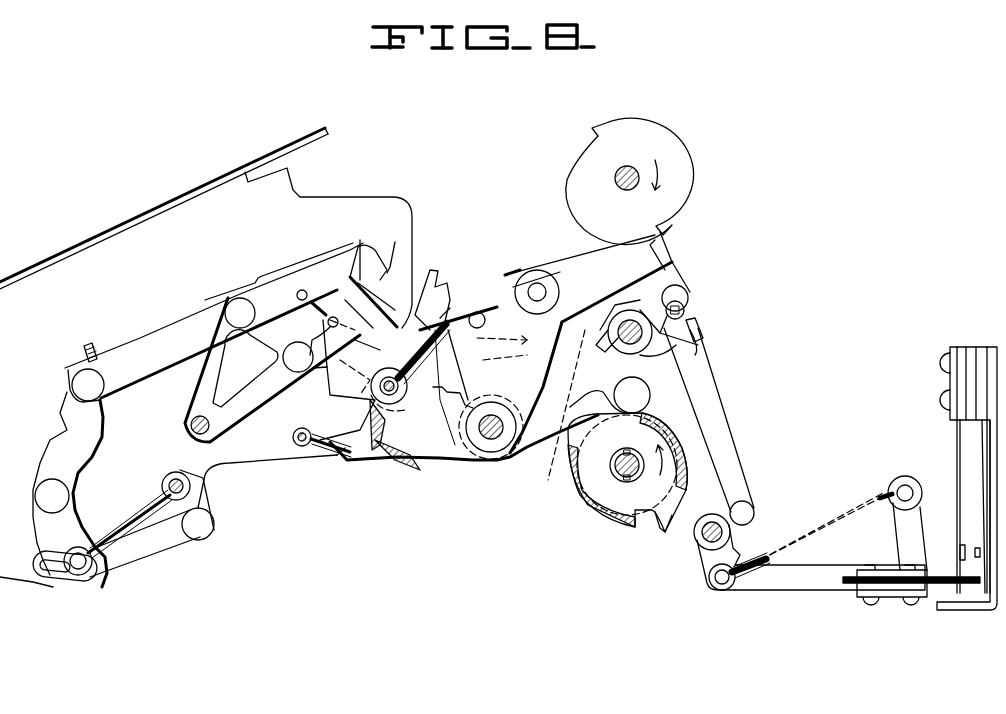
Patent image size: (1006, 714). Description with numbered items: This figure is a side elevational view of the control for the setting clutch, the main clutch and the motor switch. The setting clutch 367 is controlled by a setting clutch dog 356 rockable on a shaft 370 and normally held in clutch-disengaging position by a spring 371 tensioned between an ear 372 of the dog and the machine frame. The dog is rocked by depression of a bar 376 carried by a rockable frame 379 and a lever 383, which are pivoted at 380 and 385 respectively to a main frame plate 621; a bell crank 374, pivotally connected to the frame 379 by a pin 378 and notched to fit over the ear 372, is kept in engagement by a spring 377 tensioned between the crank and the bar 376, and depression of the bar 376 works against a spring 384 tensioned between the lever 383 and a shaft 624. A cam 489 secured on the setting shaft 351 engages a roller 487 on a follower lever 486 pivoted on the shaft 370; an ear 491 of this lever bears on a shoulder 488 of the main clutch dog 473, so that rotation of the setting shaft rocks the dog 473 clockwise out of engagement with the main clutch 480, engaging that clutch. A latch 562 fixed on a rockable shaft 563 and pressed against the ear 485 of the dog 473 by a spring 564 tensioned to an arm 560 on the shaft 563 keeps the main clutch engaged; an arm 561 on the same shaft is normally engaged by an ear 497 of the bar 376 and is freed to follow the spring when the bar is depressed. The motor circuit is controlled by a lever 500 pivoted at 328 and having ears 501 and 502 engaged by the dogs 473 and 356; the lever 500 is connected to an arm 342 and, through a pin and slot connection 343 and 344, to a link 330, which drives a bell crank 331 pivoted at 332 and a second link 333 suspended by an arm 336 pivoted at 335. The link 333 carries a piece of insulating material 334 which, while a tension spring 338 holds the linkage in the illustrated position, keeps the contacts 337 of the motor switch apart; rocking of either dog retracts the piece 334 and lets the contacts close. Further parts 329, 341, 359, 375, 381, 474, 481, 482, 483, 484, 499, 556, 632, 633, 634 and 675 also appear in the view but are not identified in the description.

The pivot 328 is at (625, 328).
The arm 329 is at (704, 333).
The link 330 is at (717, 402).
The bell crank 331 is at (703, 568).
The pivot 332 is at (708, 518).
The second link 333 is at (828, 588).
The piece of insulating material 334 is at (963, 604).
The pivot 335 is at (902, 484).
The arm 336 is at (910, 532).
The contacts 337 is at (982, 470).
The tension spring 338 is at (748, 577).
The lever 341 is at (676, 280).
The arm 342 is at (700, 345).
The pin 343 is at (685, 310).
The slot 344 is at (688, 293).
The setting shaft 351 is at (615, 468).
The setting clutch dog 356 is at (448, 465).
The cam roller 359 is at (520, 272).
The setting clutch 367 is at (580, 505).
The shaft 370 is at (490, 452).
The spring 371 is at (330, 468).
The ear 372 is at (405, 470).
The bell crank 374 is at (318, 396).
The edge 375 is at (300, 337).
The bar 376 is at (307, 273).
The spring 377 is at (309, 298).
The pin 378 is at (284, 354).
The rockable frame 379 is at (198, 383).
The pivot 380 is at (192, 427).
The roller 381 is at (236, 300).
The lever 383 is at (70, 515).
The spring 384 is at (100, 573).
The pivot 385 is at (68, 495).
The main clutch dog 473 is at (570, 266).
The roller axis 474 is at (537, 292).
The main clutch 480 is at (745, 185).
The cam shaft 481 is at (615, 175).
The link end 482 is at (556, 320).
The pin 483 is at (372, 470).
The spring 484 is at (412, 360).
The ear 485 is at (444, 298).
The follower lever 486 is at (620, 380).
The roller 487 is at (642, 394).
The shoulder 488 is at (488, 348).
The cam 489 is at (666, 533).
The ear 491 is at (553, 350).
The ear 497 is at (393, 258).
The lever 499 is at (678, 263).
The lever 500 is at (616, 366).
The ear 501 is at (662, 250).
The ear 502 is at (575, 425).
The screw 556 is at (98, 352).
The arm 560 is at (292, 430).
The arm 561 is at (352, 275).
The latch 562 is at (402, 310).
The rockable shaft 563 is at (380, 350).
The spring 564 is at (336, 325).
The main frame plate 621 is at (378, 197).
The shaft 624 is at (190, 486).
The arm 632 is at (212, 510).
The arm 633 is at (158, 560).
The slot 634 is at (50, 578).
The frame member 675 is at (66, 433).